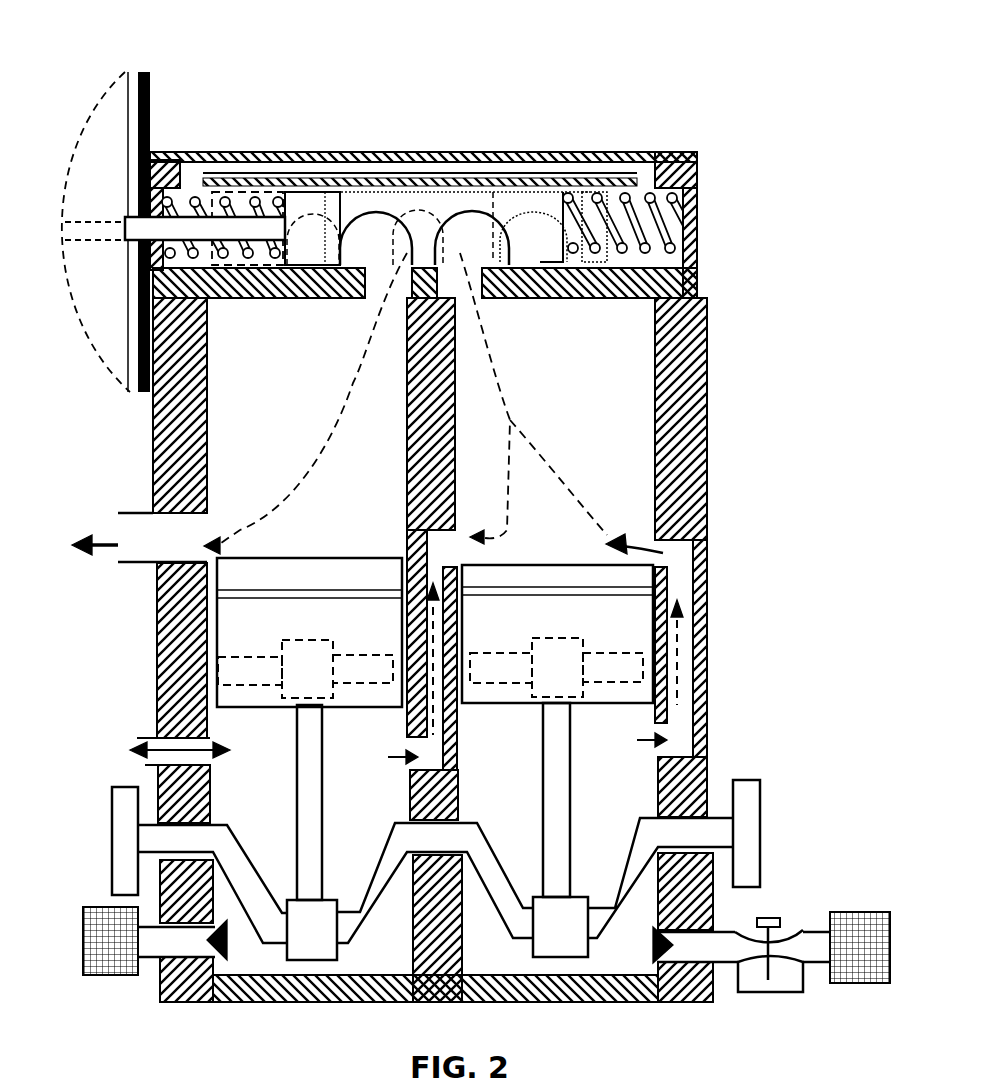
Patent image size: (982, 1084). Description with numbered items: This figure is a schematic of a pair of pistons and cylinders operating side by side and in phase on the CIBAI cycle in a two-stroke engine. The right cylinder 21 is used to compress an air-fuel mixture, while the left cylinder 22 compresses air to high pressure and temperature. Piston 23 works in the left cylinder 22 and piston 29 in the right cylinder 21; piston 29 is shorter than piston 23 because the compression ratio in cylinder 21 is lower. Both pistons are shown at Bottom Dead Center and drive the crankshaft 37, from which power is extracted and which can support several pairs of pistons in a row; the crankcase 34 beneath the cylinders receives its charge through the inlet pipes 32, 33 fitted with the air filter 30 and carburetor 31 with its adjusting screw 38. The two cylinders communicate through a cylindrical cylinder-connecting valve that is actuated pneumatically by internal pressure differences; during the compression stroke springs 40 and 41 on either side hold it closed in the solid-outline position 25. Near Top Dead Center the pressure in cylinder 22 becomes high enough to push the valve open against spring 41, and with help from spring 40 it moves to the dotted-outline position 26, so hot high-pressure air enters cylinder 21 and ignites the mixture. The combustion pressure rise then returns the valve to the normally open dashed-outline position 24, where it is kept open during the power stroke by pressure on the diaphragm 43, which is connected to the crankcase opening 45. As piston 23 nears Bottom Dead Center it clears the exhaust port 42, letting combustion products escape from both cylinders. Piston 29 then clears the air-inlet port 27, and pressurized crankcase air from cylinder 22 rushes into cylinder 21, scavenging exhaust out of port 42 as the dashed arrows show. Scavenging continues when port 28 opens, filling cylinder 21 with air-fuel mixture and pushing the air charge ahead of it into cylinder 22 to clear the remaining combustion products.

The right cylinder 21 is at (588, 418).
The left cylinder 22 is at (220, 437).
The piston 23 is at (268, 645).
The cylinder-connecting valve open position 24 is at (435, 215).
The cylinder-connecting valve closed position 25 is at (368, 210).
The cylinder-connecting valve dotted-outline position 26 is at (547, 215).
The air-inlet port 27 is at (510, 533).
The air-fuel mixture port 28 is at (678, 548).
The piston 29 is at (630, 630).
The air filter 30 is at (855, 985).
The carburetor 31 is at (753, 947).
The intake port 32 is at (670, 947).
The intake port 33 is at (110, 977).
The crankcase 34 is at (232, 948).
The crankshaft 37 is at (747, 833).
The throttle screw 38 is at (780, 920).
The spring 40 is at (243, 207).
The spring 41 is at (637, 202).
The exhaust port 42 is at (153, 532).
The diaphragm 43 is at (122, 175).
The crankcase opening 45 is at (138, 750).